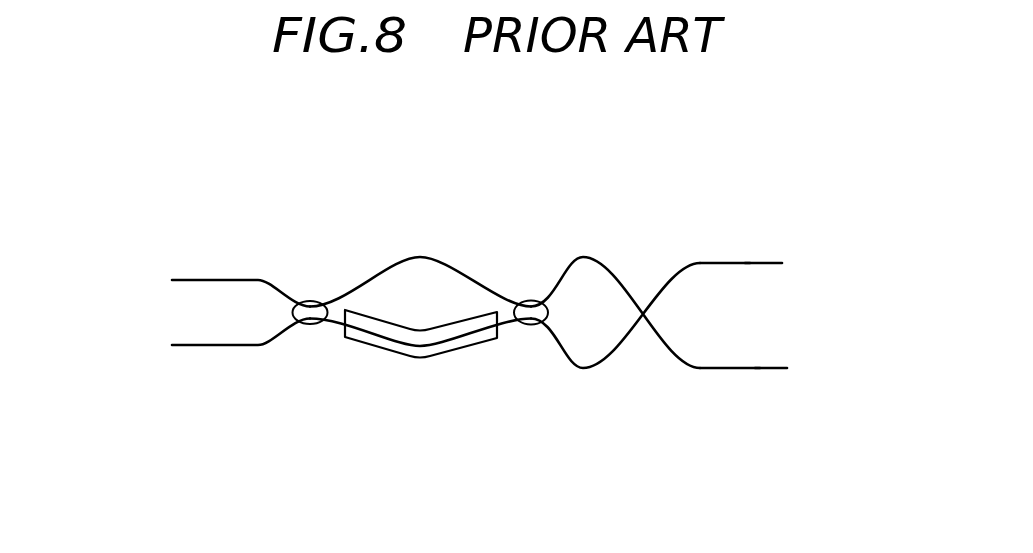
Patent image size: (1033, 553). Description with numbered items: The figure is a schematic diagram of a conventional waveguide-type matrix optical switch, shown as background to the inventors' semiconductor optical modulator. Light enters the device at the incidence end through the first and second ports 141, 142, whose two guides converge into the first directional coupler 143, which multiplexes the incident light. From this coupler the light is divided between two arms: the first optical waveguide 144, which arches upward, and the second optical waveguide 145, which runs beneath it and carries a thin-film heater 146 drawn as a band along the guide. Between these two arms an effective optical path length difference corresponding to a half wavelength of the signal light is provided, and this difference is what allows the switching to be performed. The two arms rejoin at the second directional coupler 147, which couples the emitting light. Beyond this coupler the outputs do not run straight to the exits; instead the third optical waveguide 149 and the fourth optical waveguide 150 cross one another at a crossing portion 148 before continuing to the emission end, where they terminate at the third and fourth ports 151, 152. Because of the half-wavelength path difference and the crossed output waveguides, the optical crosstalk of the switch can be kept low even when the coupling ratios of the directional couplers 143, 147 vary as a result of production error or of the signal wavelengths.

The first port 141 is at (182, 276).
The second port 142 is at (182, 349).
The first directional coupler 143 is at (308, 300).
The first optical waveguide 144 is at (418, 255).
The second optical waveguide 145 is at (375, 347).
The thin-film heater 146 is at (480, 347).
The second directional coupler 147 is at (530, 300).
The crossing portion 148 is at (642, 316).
The third optical waveguide 149 is at (745, 263).
The fourth optical waveguide 150 is at (755, 368).
The third port 151 is at (822, 262).
The fourth port 152 is at (831, 373).